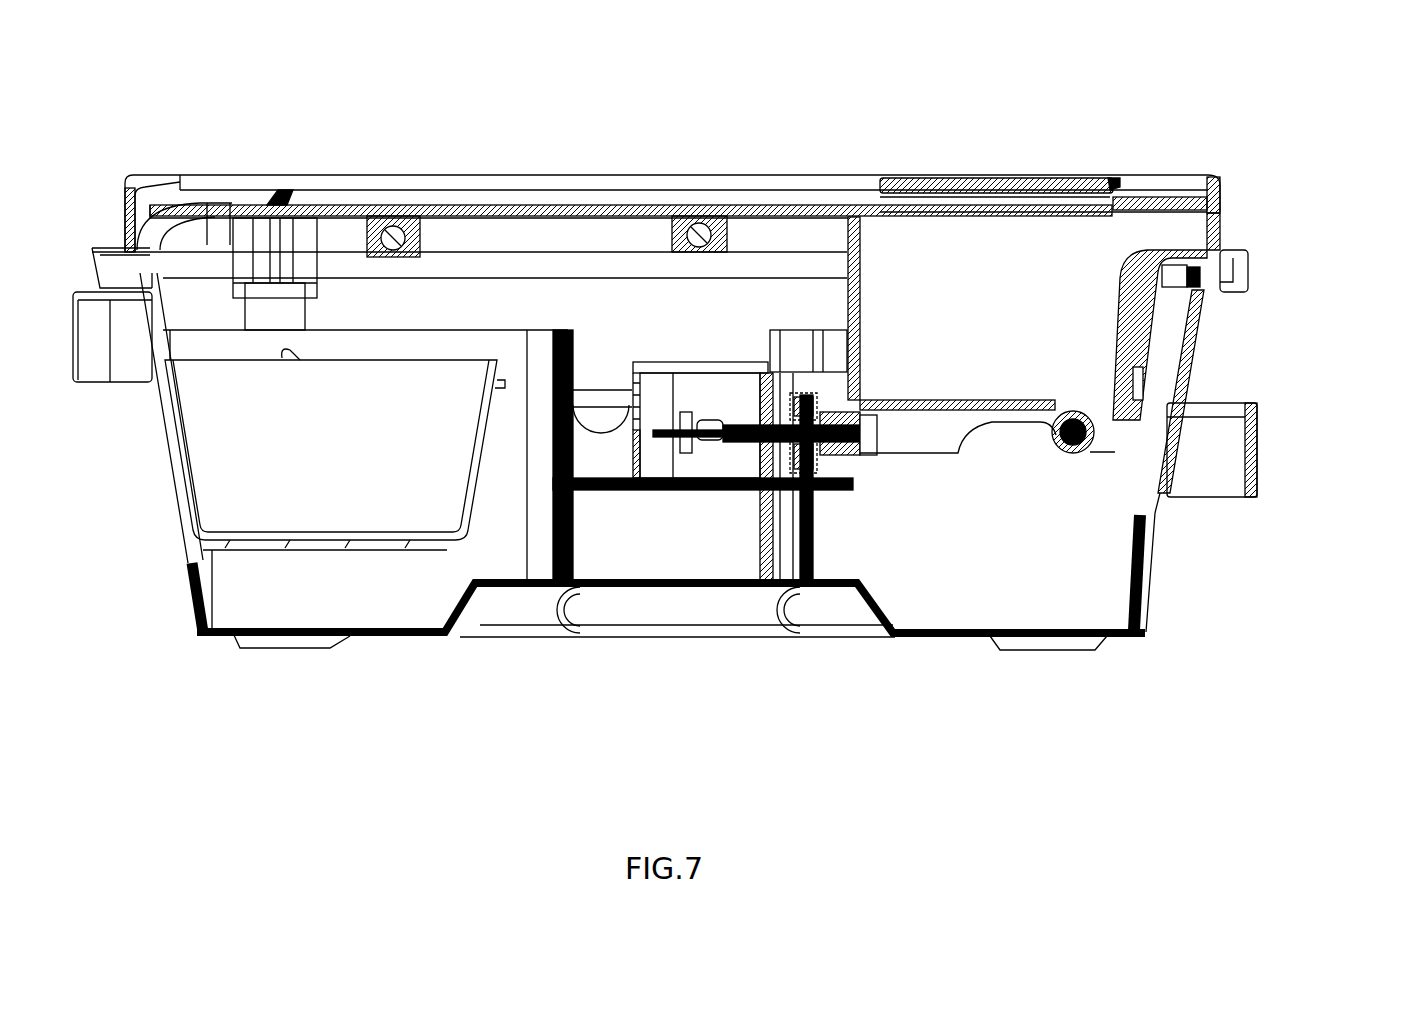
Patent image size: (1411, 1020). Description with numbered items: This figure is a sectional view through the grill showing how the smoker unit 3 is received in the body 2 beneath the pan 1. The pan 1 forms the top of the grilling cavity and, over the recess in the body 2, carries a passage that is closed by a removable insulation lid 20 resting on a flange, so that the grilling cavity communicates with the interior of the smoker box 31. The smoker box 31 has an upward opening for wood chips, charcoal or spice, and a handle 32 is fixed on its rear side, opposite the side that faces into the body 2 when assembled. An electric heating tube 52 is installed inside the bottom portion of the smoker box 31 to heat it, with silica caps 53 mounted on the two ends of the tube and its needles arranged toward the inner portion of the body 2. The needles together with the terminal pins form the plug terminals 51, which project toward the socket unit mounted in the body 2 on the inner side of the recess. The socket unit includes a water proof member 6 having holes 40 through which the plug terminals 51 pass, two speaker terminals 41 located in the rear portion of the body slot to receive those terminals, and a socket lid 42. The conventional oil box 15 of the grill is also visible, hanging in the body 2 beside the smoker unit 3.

The pan 1 is at (1155, 195).
The body 2 is at (1152, 593).
The smoker unit 3 is at (1066, 262).
The water proof member 6 is at (806, 395).
The oil box 15 is at (255, 438).
The insulation lid 20 is at (1028, 180).
The smoker box 31 is at (1143, 322).
The handle 32 is at (1167, 440).
The holes 40 is at (848, 400).
The speaker terminals 41 is at (720, 435).
The socket lid 42 is at (689, 365).
The plug terminals 51 is at (742, 445).
The heating tube 52 is at (1070, 420).
The silica caps 53 is at (826, 445).